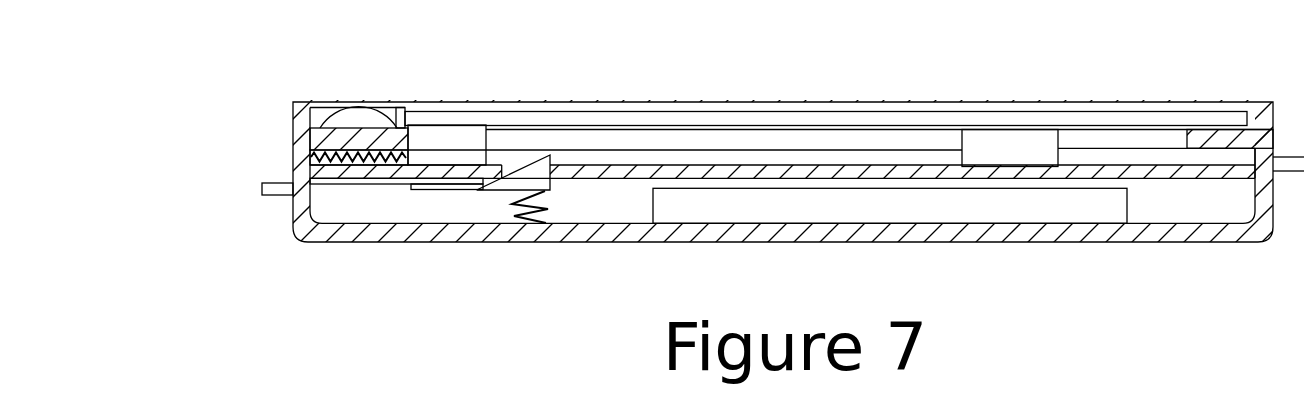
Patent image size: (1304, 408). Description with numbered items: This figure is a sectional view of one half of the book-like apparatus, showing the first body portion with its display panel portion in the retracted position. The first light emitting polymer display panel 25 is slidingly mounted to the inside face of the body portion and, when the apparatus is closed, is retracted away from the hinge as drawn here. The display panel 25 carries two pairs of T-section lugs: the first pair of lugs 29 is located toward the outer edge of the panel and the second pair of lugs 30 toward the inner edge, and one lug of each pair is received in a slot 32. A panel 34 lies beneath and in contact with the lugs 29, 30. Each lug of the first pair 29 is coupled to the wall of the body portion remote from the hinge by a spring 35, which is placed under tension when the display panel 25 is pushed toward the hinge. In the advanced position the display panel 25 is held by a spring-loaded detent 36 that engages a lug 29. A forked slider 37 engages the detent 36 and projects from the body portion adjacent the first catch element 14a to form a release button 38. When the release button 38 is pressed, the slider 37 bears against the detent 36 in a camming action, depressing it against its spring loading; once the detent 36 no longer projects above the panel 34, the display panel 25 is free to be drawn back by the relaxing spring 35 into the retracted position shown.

The first catch element 14a is at (293, 104).
The spring 35 is at (360, 153).
The first pair of T-section lugs 29 is at (443, 158).
The first light emitting polymer display panel 25 is at (590, 124).
The slot 32 is at (748, 140).
The second pair of T-section lugs 30 is at (1005, 138).
The panel 34 is at (1153, 173).
The spring-loaded detent 36 is at (535, 177).
The forked slider 37 is at (363, 182).
The release button 38 is at (273, 190).